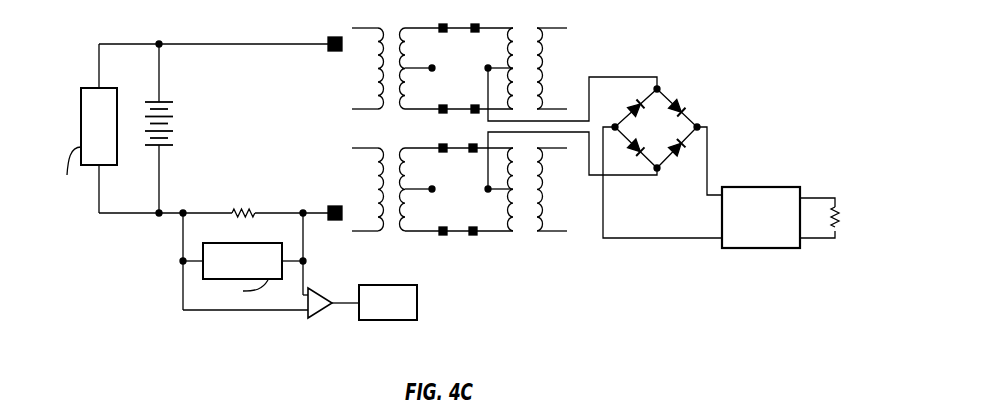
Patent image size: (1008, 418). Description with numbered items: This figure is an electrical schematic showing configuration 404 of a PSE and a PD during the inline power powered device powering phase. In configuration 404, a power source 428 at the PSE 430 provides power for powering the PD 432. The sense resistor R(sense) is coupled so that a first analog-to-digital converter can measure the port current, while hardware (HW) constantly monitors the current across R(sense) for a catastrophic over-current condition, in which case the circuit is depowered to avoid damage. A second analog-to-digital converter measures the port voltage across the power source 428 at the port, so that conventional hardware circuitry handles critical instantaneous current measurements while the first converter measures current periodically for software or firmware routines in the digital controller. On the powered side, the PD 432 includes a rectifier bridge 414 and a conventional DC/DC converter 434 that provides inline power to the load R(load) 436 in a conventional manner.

The configuration 404 is at (810, 54).
The rectifier diode bridge 414 is at (668, 93).
The power source 428 is at (173, 122).
The PSE 430 is at (443, 328).
The PD 432 is at (835, 328).
The DC/DC converter 434 is at (762, 187).
The R(load) 436 is at (838, 208).